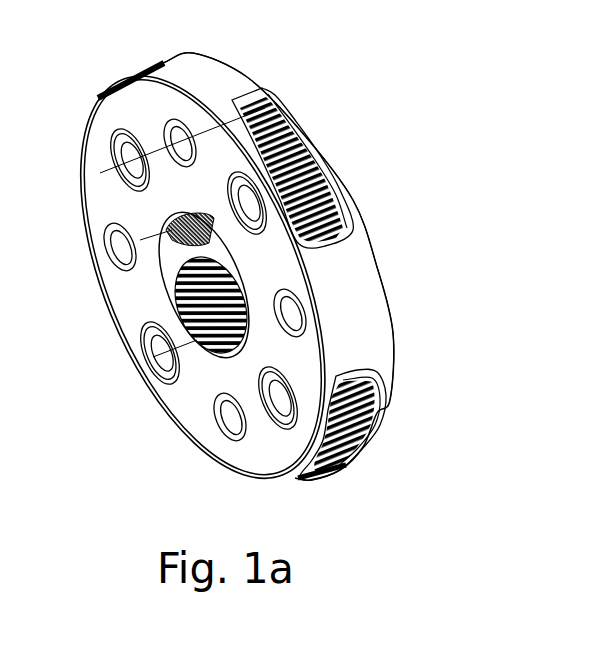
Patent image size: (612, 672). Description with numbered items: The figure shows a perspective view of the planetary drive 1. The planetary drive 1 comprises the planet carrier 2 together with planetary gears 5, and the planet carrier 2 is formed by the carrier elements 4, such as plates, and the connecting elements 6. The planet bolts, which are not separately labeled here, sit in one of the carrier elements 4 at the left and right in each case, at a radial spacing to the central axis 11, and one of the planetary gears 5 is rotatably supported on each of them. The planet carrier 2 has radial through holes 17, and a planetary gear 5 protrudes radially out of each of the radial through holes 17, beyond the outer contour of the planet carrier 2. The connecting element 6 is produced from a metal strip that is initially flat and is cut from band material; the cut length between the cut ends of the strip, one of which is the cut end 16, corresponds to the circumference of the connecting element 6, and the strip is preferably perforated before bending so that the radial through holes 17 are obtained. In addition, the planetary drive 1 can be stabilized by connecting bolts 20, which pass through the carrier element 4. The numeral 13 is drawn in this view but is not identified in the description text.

The planetary drive 1 is at (354, 161).
The planet carrier 2 is at (266, 458).
The carrier element 4 is at (273, 84).
The planetary gear 5 is at (317, 127).
The connecting element 6 is at (365, 330).
The central axis 11 is at (173, 300).
The chamfer edge 13 is at (197, 75).
The cut end 16 is at (230, 82).
The radial through hole 17 is at (363, 220).
The connecting bolt 20 is at (300, 298).